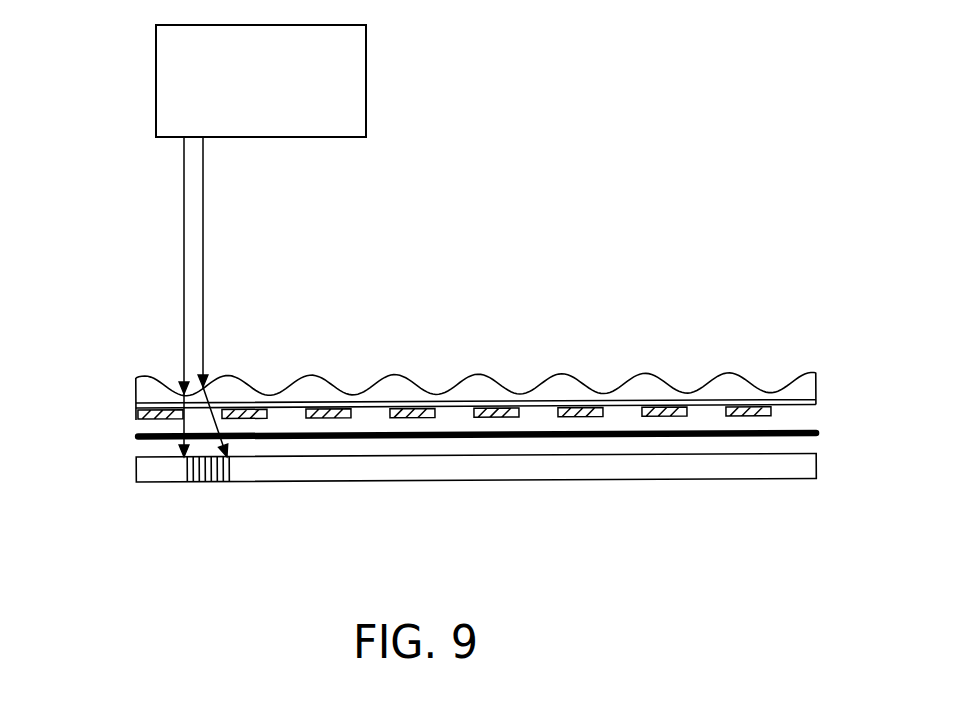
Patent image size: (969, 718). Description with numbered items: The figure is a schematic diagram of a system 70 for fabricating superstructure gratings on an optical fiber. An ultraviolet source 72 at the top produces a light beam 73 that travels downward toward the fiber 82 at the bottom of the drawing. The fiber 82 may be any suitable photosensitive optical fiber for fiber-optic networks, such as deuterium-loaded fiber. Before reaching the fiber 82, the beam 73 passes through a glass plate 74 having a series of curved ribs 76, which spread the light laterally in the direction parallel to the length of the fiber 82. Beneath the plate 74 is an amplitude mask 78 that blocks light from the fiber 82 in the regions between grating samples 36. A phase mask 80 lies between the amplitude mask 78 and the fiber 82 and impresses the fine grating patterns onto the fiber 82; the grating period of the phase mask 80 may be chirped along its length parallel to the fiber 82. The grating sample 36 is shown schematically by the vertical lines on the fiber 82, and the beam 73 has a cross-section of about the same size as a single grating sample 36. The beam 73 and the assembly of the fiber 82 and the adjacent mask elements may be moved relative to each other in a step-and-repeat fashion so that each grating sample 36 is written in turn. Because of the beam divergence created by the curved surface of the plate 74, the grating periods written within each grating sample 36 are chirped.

The system 70 is at (603, 127).
The ultraviolet (UV) source 72 is at (366, 99).
The light beam 73 is at (216, 250).
The glass plate 74 is at (144, 387).
The curved ribs 76 is at (147, 378).
The amplitude mask 78 is at (136, 408).
The phase mask 80 is at (135, 437).
The fiber 82 is at (165, 482).
The grating sample 36 is at (207, 492).